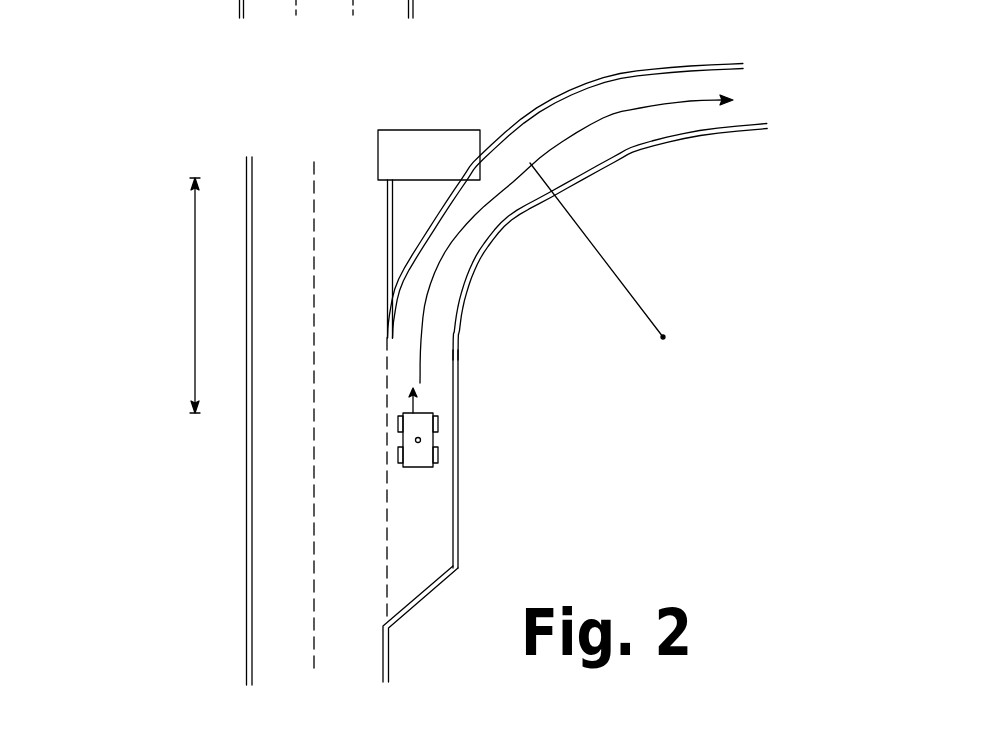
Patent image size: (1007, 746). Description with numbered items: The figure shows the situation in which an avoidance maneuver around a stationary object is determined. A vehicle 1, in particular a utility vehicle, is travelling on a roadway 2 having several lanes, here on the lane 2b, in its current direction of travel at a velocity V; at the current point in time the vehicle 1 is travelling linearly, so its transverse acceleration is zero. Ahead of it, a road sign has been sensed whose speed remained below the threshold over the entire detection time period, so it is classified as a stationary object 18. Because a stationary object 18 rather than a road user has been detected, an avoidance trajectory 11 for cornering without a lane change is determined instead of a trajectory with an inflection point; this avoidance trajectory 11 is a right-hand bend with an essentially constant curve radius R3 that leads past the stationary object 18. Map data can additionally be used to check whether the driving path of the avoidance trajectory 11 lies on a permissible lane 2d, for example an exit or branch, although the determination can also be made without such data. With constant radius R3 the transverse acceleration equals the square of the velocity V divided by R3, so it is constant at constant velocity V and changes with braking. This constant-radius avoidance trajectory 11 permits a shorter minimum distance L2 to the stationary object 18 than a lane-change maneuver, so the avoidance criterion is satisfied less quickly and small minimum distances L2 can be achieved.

The vehicle 1 is at (423, 468).
The roadway 2 is at (273, 608).
The lane 2b is at (353, 653).
The permissible lane 2d is at (693, 83).
The avoidance trajectory 11 is at (607, 125).
The stationary object 18 is at (445, 142).
The curve radius R3 is at (608, 268).
The minimum distance L2 is at (194, 222).
The velocity V is at (413, 400).